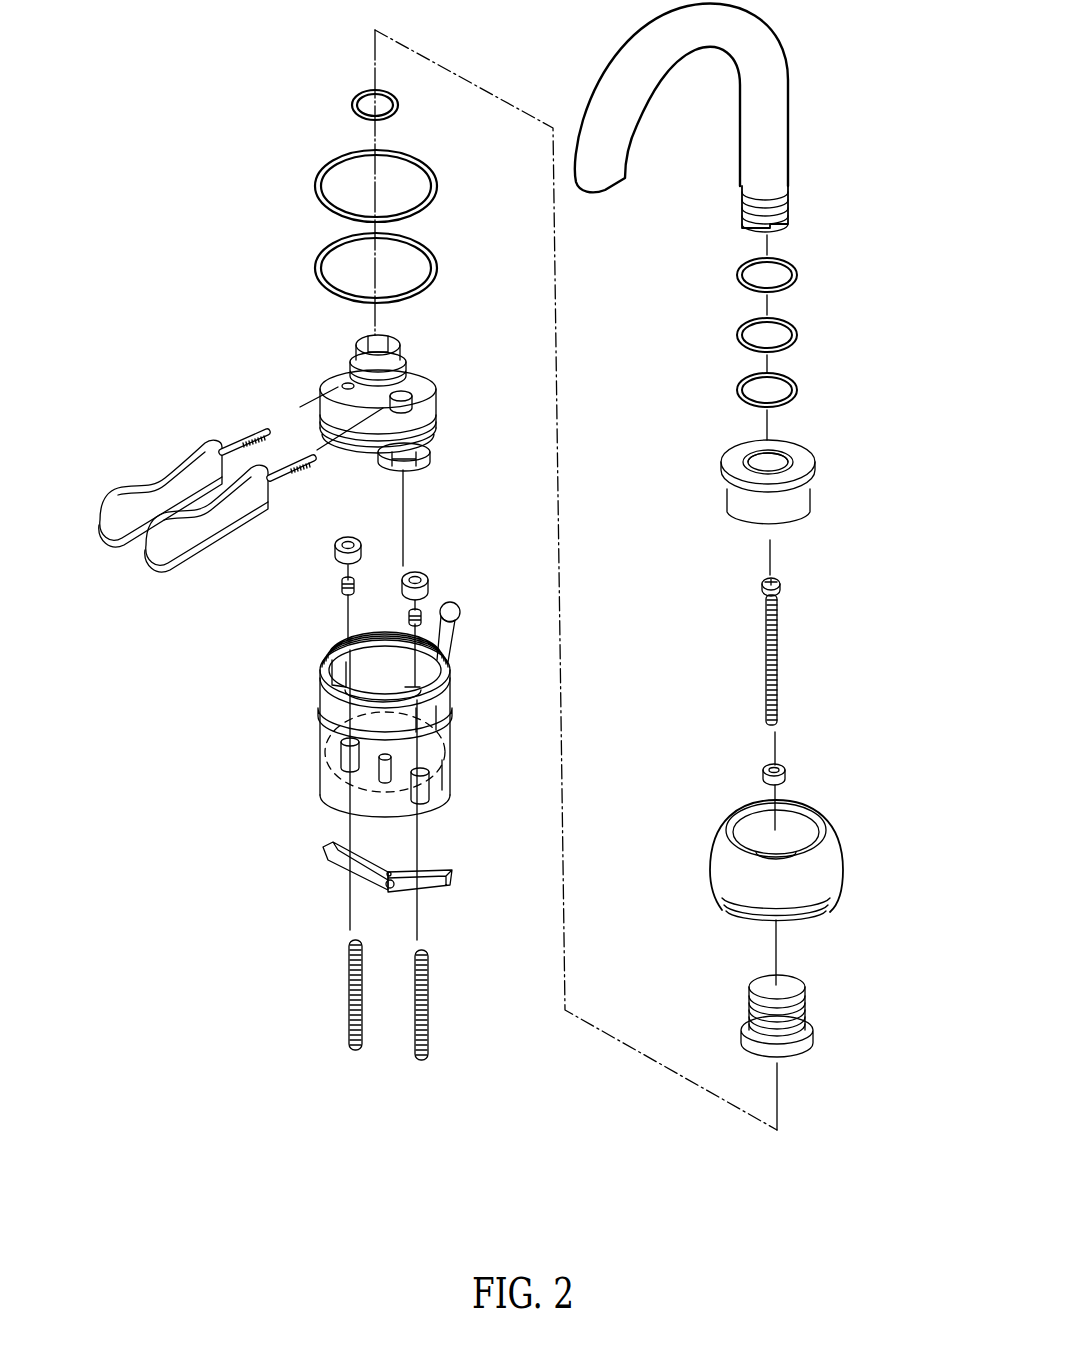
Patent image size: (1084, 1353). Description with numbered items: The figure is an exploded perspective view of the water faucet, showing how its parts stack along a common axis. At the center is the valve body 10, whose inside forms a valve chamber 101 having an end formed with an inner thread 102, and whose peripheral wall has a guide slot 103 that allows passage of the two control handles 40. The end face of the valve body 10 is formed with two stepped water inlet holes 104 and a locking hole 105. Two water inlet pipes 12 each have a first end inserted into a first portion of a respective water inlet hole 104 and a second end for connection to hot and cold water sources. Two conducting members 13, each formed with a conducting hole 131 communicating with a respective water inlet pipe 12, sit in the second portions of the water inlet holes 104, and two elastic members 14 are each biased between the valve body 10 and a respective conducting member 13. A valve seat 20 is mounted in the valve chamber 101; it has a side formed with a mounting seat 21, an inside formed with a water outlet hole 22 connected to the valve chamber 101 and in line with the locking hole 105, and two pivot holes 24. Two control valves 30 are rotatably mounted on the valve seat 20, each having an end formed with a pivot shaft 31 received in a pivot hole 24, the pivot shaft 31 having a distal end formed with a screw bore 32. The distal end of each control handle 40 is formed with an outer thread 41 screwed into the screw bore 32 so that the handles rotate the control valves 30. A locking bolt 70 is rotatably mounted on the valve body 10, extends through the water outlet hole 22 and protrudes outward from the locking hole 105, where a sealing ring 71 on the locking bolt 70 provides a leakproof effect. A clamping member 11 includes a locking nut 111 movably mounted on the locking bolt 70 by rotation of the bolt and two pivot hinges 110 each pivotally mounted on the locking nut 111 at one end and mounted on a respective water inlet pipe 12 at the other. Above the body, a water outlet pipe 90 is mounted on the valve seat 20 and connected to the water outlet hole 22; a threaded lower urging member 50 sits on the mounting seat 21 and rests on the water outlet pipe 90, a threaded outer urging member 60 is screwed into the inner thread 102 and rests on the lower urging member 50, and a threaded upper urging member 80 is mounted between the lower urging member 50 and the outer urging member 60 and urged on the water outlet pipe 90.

The valve body 10 is at (374, 771).
The valve chamber 101 is at (405, 690).
The inner thread 102 is at (330, 648).
The guide slot 103 is at (320, 720).
The stepped water inlet holes 104 is at (450, 795).
The locking hole 105 is at (332, 798).
The clamping member 11 is at (353, 905).
The pivot hinges 110 is at (322, 873).
The locking nut 111 is at (392, 886).
The water inlet pipes 12 is at (333, 1002).
The conducting members 13 is at (442, 577).
The conducting hole 131 is at (419, 575).
The elastic members 14 is at (340, 584).
The valve seat 20 is at (407, 280).
The mounting seat 21 is at (398, 338).
The water outlet hole 22 is at (372, 342).
The pivot holes 24 is at (420, 420).
The control valves 30 is at (444, 444).
The pivot shaft 31 is at (405, 402).
The screw bore 32 is at (347, 382).
The control handles 40 is at (197, 553).
The outer thread 41 is at (293, 478).
The lower urging member 50 is at (815, 1010).
The outer urging member 60 is at (842, 830).
The locking bolt 70 is at (788, 642).
The sealing ring 71 is at (762, 772).
The upper urging member 80 is at (825, 470).
The water outlet pipe 90 is at (797, 128).